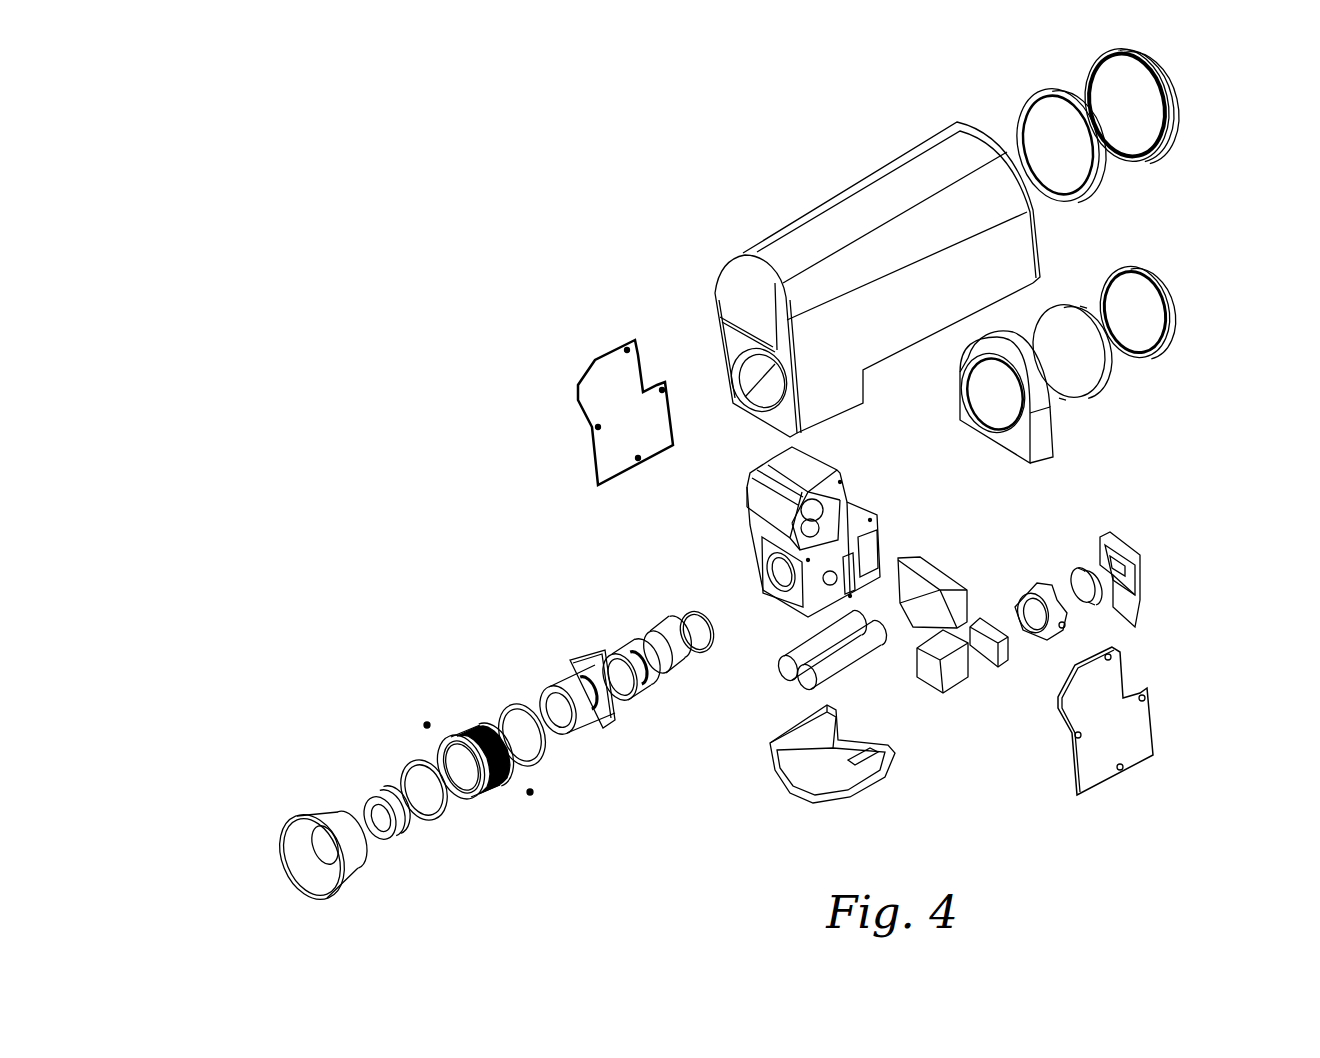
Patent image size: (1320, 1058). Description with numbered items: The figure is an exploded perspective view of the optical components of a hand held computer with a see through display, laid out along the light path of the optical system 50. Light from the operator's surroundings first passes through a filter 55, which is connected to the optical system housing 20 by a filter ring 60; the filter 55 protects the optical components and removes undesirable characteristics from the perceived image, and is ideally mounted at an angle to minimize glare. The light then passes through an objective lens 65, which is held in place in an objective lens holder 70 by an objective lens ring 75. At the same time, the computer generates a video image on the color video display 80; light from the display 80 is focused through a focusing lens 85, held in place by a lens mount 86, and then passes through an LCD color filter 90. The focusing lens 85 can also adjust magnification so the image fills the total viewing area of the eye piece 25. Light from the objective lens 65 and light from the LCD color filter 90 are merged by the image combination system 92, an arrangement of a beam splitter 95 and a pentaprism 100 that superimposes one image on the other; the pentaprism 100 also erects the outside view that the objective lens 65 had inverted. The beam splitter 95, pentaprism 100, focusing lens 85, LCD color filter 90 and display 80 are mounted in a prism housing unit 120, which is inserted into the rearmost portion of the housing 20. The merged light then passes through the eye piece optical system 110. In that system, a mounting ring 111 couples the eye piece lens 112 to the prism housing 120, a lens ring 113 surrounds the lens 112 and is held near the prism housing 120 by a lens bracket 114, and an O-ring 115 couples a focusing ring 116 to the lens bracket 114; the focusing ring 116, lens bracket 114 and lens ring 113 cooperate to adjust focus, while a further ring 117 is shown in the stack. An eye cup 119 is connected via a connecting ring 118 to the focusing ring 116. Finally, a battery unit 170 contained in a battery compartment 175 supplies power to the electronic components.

The optical system housing 20 is at (795, 243).
The eye piece 25 is at (287, 890).
The optical system 50 is at (468, 360).
The filter 55 is at (1160, 150).
The filter ring 60 is at (1095, 192).
The objective lens 65 is at (1107, 387).
The objective lens holder 70 is at (1047, 432).
The objective lens ring 75 is at (1167, 345).
The color video display 80 is at (1142, 540).
The focusing lens 85 is at (1080, 565).
The lens mount 86 is at (1030, 577).
The LCD color filter 90 is at (1013, 655).
The image combination system 92 is at (968, 712).
The beam splitter 95 is at (923, 670).
The pentaprism 100 is at (918, 557).
The eye piece optical system 110 is at (348, 900).
The mounting ring 111 is at (693, 612).
The eye piece 112 is at (643, 632).
The lens ring 113 is at (608, 657).
The lens bracket 114 is at (556, 690).
The O-ring 115 is at (500, 712).
The focusing ring 116 is at (442, 745).
The ring 117 is at (403, 768).
The connecting ring 118 is at (367, 800).
The eye cup 119 is at (320, 817).
The prism housing unit 120 is at (752, 503).
The battery unit 170 is at (783, 660).
The battery compartment 175 is at (800, 780).